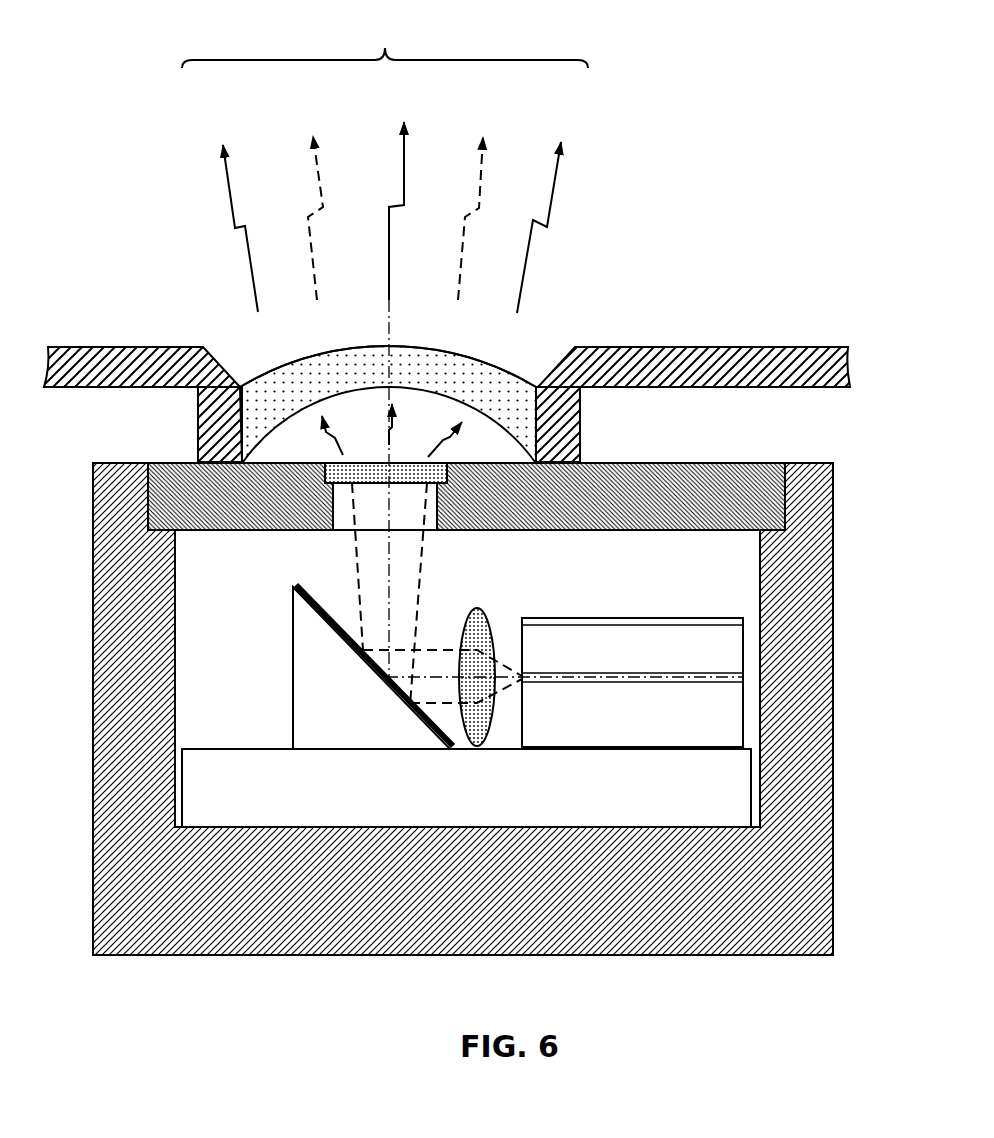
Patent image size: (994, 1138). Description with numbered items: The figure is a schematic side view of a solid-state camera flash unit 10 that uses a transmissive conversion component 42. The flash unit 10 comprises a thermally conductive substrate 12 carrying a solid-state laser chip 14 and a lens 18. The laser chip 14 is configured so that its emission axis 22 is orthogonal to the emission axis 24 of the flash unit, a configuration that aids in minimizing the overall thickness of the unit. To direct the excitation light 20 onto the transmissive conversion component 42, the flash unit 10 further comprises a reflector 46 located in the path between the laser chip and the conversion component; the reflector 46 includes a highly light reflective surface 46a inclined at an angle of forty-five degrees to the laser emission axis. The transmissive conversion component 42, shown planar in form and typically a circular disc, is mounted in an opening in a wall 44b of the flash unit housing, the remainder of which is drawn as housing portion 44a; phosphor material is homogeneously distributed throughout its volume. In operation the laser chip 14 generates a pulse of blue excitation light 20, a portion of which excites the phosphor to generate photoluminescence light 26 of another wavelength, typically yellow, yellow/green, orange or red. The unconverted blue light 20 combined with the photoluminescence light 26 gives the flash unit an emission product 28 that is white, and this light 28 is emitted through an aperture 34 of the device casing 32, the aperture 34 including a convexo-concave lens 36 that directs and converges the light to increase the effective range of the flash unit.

The flash unit 10 is at (812, 972).
The thermally conductive substrate 12 is at (466, 788).
The solid-state laser chip 14 is at (845, 618).
The lens 18 is at (480, 617).
The excitation light 20 is at (389, 573).
The laser chip emission axis/plane 22 is at (258, 648).
The emission axis 24 is at (389, 332).
The photoluminescence light 26 is at (395, 269).
The emission product 28 is at (385, 38).
The device casing 32 is at (132, 368).
The aperture 34 is at (532, 354).
The lens 36 is at (500, 372).
The transmissive conversion component 42 is at (450, 462).
The housing base 44a is at (463, 709).
The wall 44b is at (466, 496).
The reflector 46 is at (371, 668).
The highly light reflective surface 46a is at (362, 645).